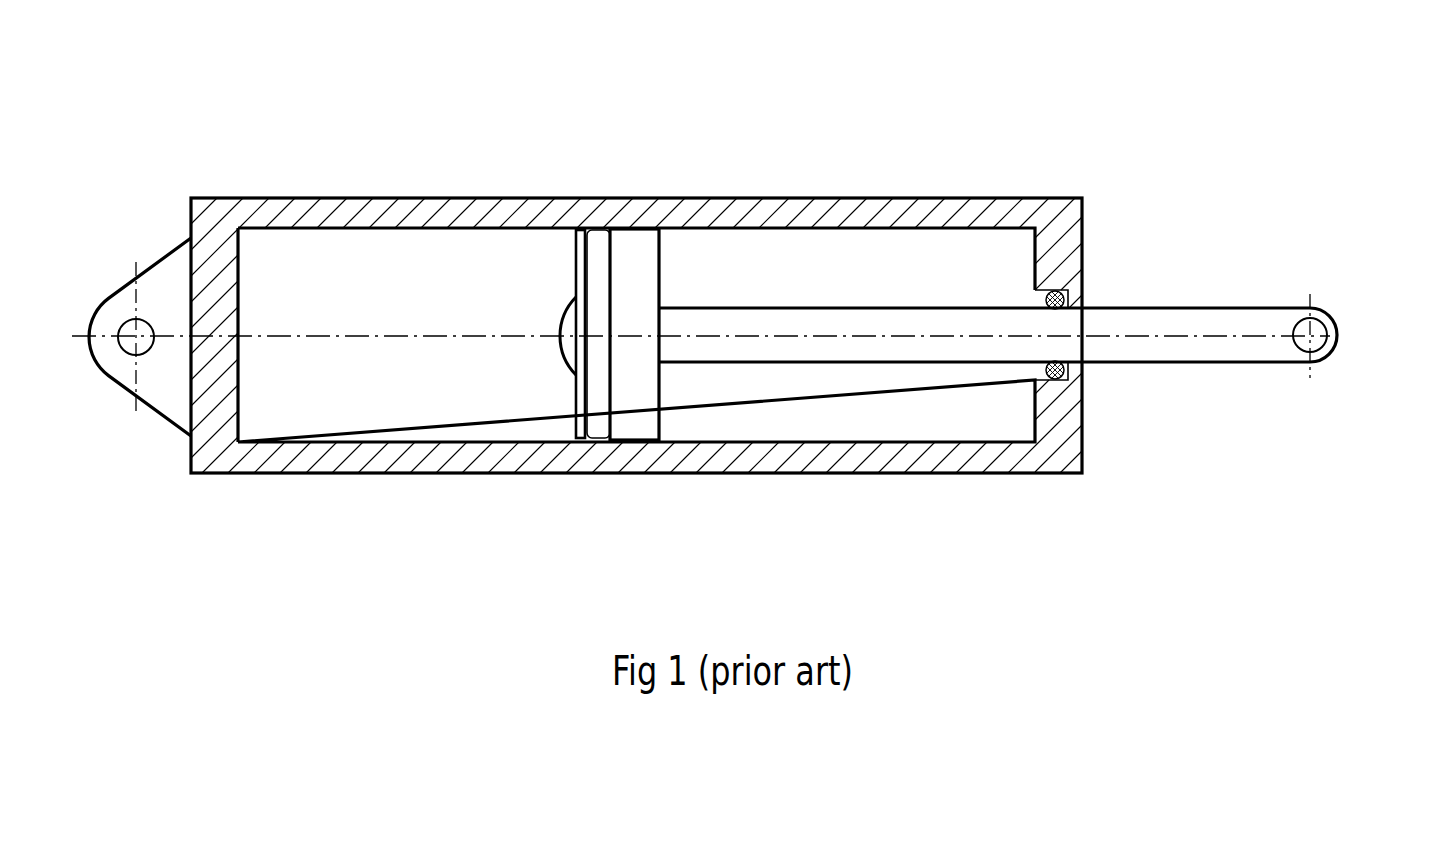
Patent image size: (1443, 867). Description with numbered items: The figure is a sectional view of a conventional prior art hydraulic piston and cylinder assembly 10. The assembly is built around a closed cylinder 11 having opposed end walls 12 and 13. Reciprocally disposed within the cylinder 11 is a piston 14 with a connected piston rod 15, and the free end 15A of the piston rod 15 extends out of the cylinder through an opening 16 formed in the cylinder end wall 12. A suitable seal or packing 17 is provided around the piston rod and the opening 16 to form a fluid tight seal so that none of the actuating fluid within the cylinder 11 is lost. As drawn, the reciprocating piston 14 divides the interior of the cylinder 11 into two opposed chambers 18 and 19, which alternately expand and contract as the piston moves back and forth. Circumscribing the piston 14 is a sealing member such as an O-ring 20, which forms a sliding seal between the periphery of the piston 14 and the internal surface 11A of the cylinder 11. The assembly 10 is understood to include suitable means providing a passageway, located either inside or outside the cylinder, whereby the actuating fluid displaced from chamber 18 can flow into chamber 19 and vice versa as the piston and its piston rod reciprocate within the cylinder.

The hydraulic piston and cylinder assembly 10 is at (558, 167).
The cylinder 11 is at (290, 198).
The internal surface of the cylinder 11A is at (363, 263).
The end wall 12 is at (1055, 423).
The end wall 13 is at (190, 437).
The piston 14 is at (573, 273).
The piston rod 15 is at (1198, 333).
The free end of the piston rod 15A is at (1323, 358).
The opening 16 is at (1087, 303).
The seal or packing 17 is at (1068, 288).
The chamber 18 is at (725, 425).
The chamber 19 is at (440, 420).
The O-ring 20 is at (595, 423).